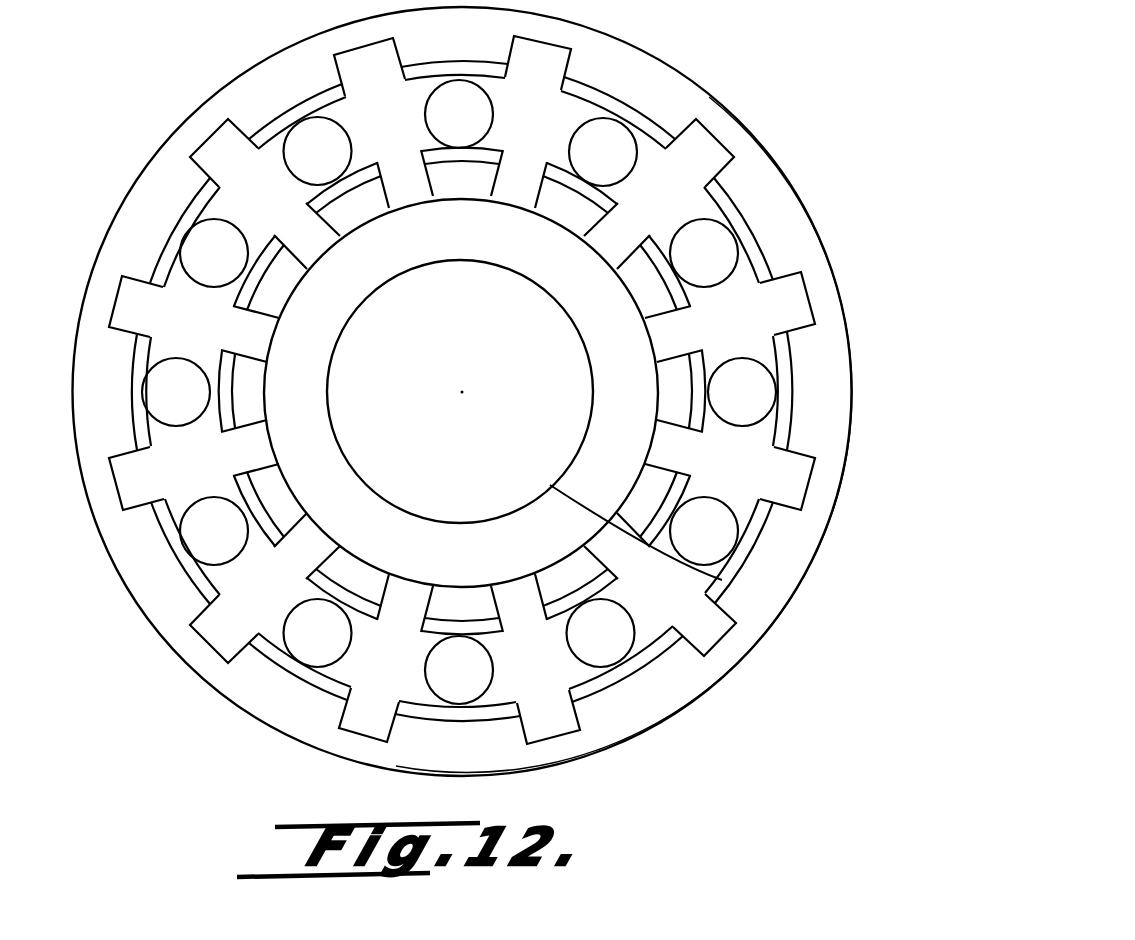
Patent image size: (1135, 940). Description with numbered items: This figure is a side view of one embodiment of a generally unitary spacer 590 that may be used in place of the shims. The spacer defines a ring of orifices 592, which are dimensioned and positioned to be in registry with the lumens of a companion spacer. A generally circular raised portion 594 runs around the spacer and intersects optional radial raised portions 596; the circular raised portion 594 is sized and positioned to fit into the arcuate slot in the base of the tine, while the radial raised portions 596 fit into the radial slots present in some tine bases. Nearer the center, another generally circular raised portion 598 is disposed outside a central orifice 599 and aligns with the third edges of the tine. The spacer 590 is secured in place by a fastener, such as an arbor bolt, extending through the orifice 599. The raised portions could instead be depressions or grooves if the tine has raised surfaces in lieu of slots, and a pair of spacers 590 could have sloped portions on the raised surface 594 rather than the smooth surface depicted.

The spacer 590 is at (778, 148).
The orifices 592 is at (745, 383).
The generally circular raised portion 594 is at (650, 620).
The radial raised portions 596 is at (797, 482).
The generally circular raised portion 598 is at (630, 440).
The orifice 599 is at (722, 580).